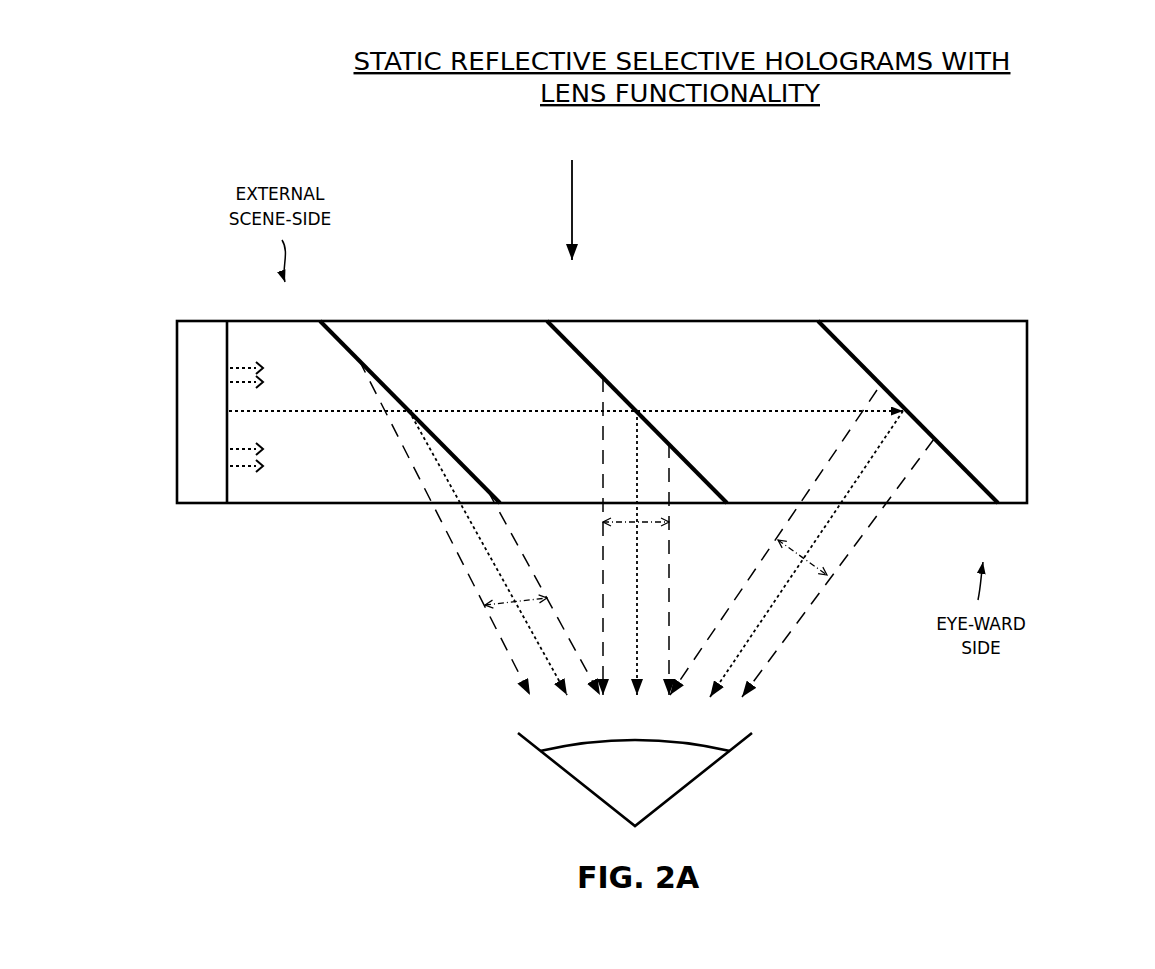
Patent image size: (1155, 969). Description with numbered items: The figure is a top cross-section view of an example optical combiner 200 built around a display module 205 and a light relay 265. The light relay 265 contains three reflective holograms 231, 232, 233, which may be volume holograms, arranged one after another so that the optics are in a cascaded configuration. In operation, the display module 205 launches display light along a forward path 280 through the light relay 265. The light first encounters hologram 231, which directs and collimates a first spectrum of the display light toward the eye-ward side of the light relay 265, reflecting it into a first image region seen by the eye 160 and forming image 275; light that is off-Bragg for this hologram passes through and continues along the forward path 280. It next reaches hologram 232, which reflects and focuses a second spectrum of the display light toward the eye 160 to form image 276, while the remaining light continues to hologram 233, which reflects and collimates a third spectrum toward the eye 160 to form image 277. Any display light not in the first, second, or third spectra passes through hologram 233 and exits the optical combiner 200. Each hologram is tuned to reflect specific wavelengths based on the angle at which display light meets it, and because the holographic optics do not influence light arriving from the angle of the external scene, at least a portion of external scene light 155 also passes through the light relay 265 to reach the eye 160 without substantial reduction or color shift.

The optical combiner 200 is at (1122, 153).
The display module 205 is at (197, 319).
The external scene light 155 is at (575, 183).
The reflective hologram 231 is at (363, 362).
The reflective hologram 232 is at (603, 372).
The reflective hologram 233 is at (845, 342).
The light relay 265 is at (972, 320).
The forward path 280 is at (353, 414).
The image 275 is at (510, 603).
The image 276 is at (633, 523).
The image 277 is at (808, 565).
The eye 160 is at (635, 779).